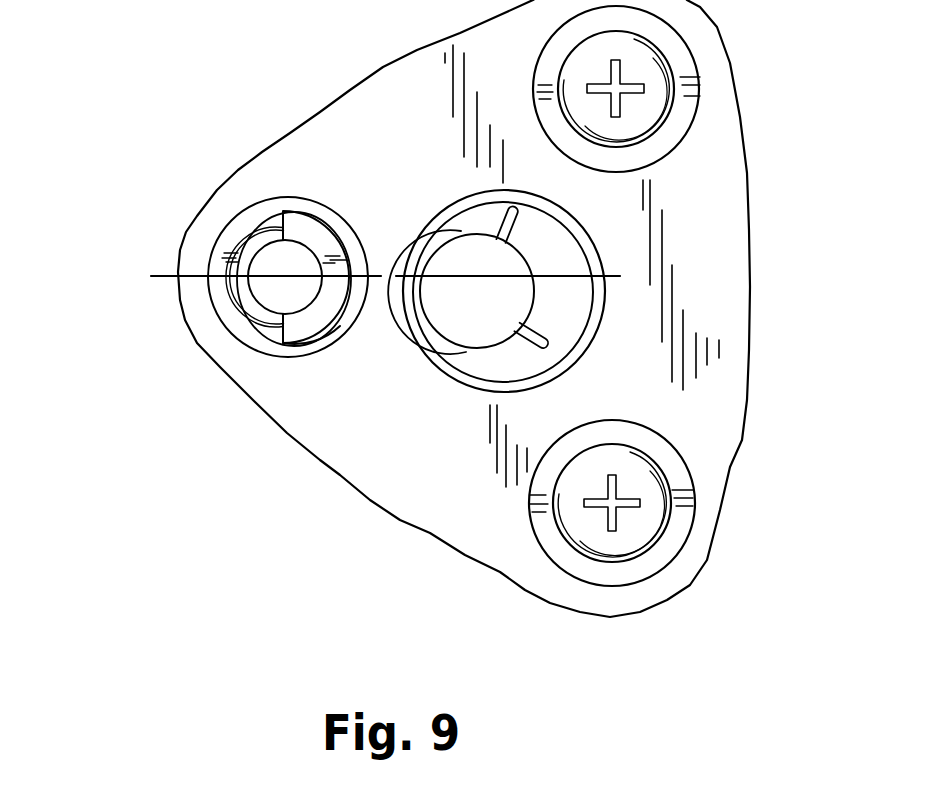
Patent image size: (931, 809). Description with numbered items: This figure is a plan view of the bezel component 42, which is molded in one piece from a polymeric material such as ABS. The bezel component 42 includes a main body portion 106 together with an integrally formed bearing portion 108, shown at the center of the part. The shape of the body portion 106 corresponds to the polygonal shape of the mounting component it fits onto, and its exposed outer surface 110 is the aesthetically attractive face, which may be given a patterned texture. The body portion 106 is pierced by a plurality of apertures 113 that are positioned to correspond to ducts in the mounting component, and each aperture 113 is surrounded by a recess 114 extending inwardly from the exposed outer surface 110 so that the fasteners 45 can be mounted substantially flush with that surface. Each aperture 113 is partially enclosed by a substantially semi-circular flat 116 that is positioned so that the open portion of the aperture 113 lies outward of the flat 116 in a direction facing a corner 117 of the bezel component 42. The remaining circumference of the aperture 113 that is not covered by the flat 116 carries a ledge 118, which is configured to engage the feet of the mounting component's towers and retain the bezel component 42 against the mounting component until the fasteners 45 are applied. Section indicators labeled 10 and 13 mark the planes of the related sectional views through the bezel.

The bezel component 42 is at (505, 308).
The main body portion 106 is at (380, 61).
The exposed outer surface 110 is at (705, 288).
The corner 117 is at (177, 268).
The recess 114 is at (288, 290).
The semi-circular flat 116 is at (303, 323).
The ledge 118 is at (253, 315).
The aperture 113 is at (292, 270).
The bearing portion 108 is at (555, 320).
The fastener 45 is at (657, 82).
The section line 10- 10 is at (381, 390).
The section line 13- 13 is at (620, 220).